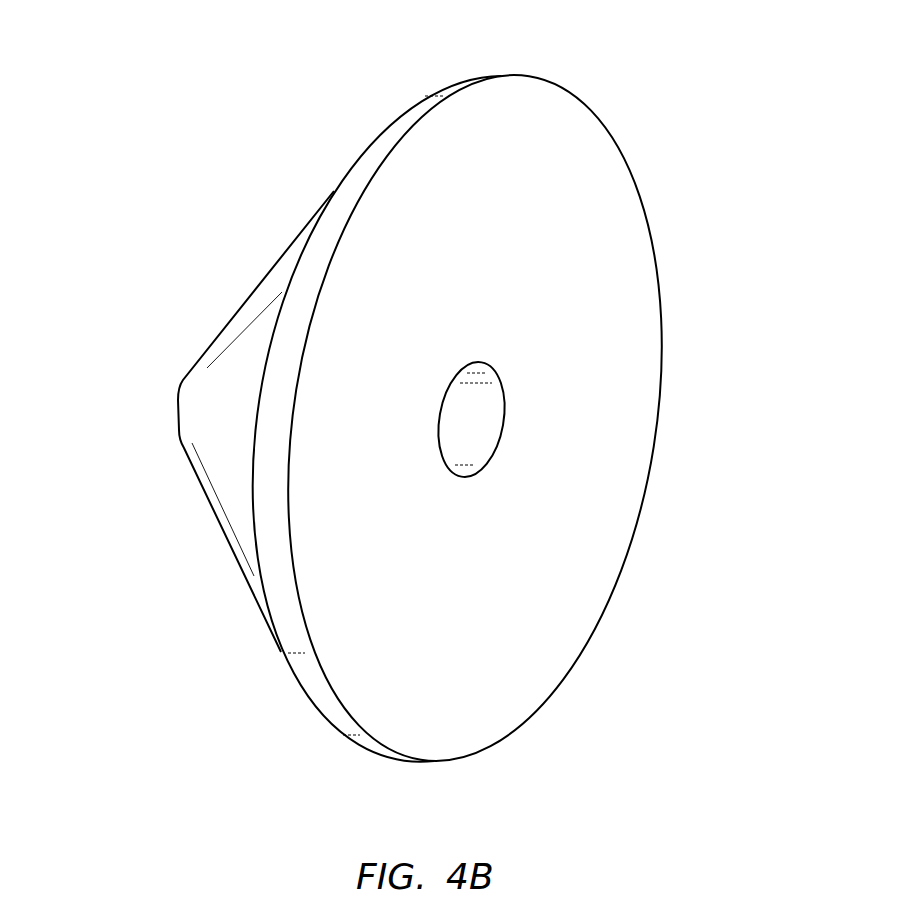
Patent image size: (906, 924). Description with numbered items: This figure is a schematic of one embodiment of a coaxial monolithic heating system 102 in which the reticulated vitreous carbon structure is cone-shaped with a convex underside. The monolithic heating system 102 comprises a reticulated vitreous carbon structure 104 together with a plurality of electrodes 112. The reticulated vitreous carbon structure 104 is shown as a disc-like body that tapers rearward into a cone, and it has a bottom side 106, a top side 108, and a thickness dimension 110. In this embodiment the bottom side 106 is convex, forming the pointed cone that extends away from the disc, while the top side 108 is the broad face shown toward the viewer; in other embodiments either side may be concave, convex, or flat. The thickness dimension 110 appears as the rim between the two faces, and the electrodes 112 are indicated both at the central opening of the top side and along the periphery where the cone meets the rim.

The monolithic heating system 102 is at (409, 401).
The reticulated vitreous carbon structure 104 is at (422, 401).
The bottom side 106 is at (228, 403).
The top side 108 is at (587, 220).
The thickness dimension 110 is at (272, 500).
The electrodes 112 is at (483, 420).